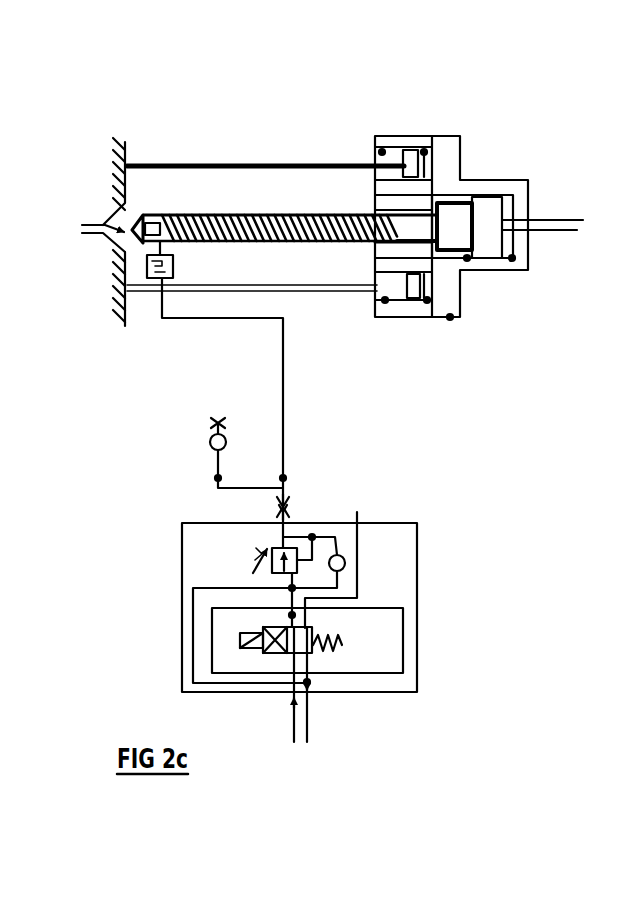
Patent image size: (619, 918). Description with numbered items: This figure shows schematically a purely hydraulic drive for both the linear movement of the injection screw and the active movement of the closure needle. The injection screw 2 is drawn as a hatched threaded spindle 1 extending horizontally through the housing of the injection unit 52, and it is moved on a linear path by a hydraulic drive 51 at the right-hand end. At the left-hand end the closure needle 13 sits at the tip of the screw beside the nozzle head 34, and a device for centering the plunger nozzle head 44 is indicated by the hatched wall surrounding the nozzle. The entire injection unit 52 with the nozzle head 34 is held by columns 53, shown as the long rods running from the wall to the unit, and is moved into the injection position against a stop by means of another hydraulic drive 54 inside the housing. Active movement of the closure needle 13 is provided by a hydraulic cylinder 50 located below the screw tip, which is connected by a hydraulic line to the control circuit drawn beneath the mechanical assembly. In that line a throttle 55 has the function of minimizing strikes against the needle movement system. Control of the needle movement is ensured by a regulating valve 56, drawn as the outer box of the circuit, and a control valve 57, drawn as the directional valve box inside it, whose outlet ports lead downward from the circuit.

The threaded spindle 1 is at (276, 215).
The injection screw 2 is at (292, 241).
The closure needle 13 is at (155, 222).
The nozzle head 34 is at (107, 223).
The device for centering the plunger nozzle head 44 is at (125, 142).
The hydraulic cylinder 50 is at (153, 278).
The hydraulic drive 51 is at (492, 203).
The injection unit 52 is at (459, 121).
The columns 53 is at (254, 162).
The hydraulic drive 54 is at (413, 161).
The throttle 55 is at (288, 505).
The regulating valve 56 is at (434, 551).
The control valve 57 is at (426, 645).